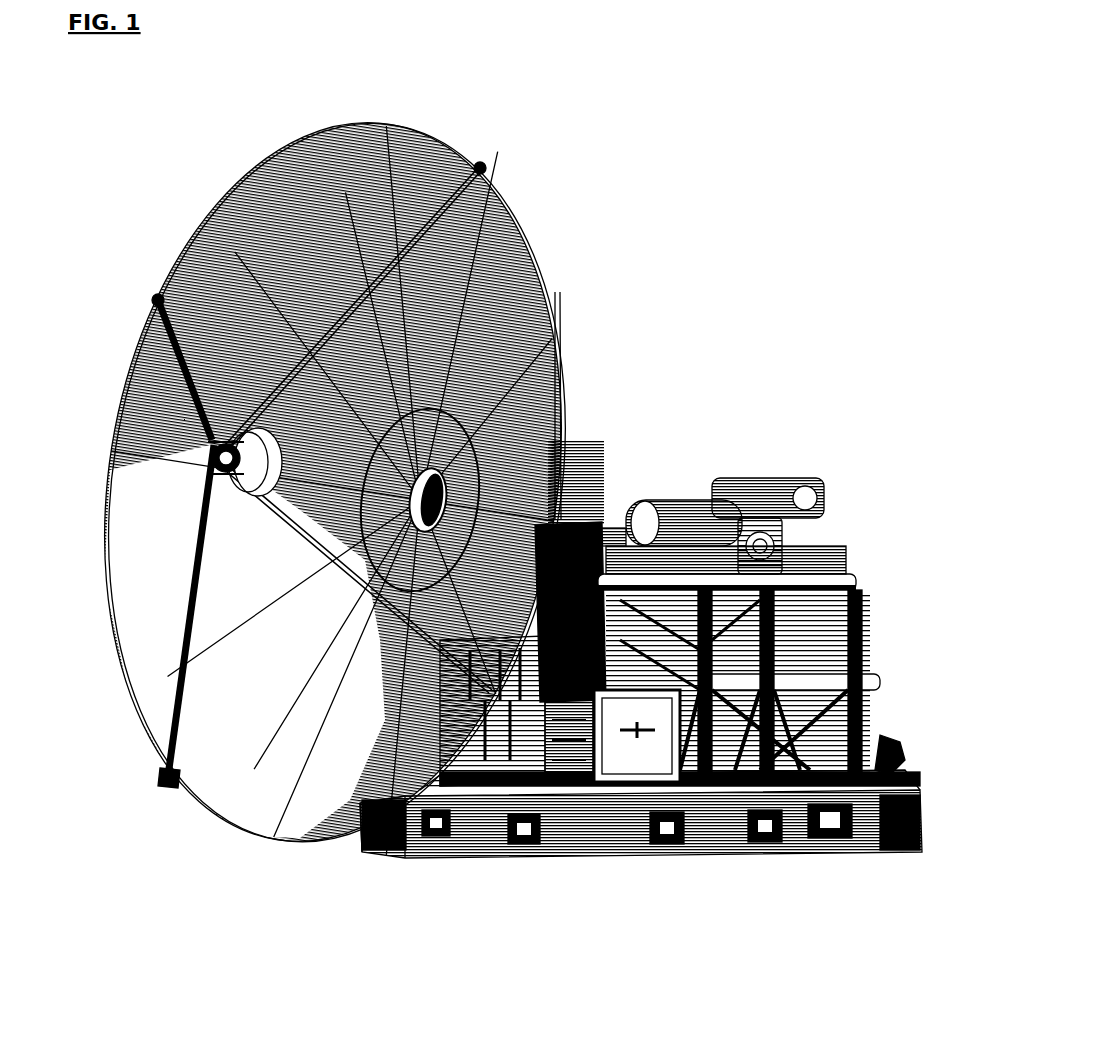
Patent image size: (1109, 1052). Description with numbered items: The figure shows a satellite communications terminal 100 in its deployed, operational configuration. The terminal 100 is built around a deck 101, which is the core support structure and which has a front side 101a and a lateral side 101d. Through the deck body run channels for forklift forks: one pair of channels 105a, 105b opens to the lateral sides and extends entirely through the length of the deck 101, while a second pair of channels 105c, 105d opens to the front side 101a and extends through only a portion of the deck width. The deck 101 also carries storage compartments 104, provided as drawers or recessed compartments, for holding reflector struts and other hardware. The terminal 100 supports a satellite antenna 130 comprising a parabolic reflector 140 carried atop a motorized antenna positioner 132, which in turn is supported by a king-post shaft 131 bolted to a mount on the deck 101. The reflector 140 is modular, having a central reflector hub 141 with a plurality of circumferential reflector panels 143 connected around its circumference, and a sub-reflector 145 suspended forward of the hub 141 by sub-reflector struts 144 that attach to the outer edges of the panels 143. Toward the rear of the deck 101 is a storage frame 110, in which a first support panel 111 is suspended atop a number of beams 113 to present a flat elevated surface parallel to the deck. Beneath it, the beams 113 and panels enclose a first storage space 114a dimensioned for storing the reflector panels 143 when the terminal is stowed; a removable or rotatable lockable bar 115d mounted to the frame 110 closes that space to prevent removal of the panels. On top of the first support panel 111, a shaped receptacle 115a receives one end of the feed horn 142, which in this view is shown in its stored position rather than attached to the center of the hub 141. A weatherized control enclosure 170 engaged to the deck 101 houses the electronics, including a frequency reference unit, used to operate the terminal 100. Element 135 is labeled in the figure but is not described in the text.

The satellite communications terminal 100 is at (713, 162).
The satellite antenna 130 is at (178, 196).
The parabolic reflector 140 is at (216, 818).
The reflector hub 141 is at (466, 488).
The reflector panels 143 is at (505, 248).
The sub-reflector struts 144 is at (190, 400).
The sub-reflector 145 is at (256, 440).
The antenna positioner 132 is at (560, 550).
The storage frame 110 is at (870, 622).
The first support panel 111 is at (840, 580).
The shaped receptacle 115a is at (772, 570).
The lockable bar 115d is at (870, 674).
The beams 113 is at (868, 762).
The feed horn 142 is at (656, 532).
The actuator housing 135 is at (790, 490).
The deck 101 is at (546, 780).
The front side 101a is at (406, 832).
The lateral side 101d is at (862, 820).
The storage compartments 104 is at (828, 838).
The channel 105a is at (664, 846).
The channel 105b is at (764, 840).
The channel 105c is at (420, 852).
The channel 105d is at (520, 858).
The first storage space 114a is at (834, 776).
The control enclosure 170 is at (626, 770).
The king-post shaft 131 is at (500, 760).